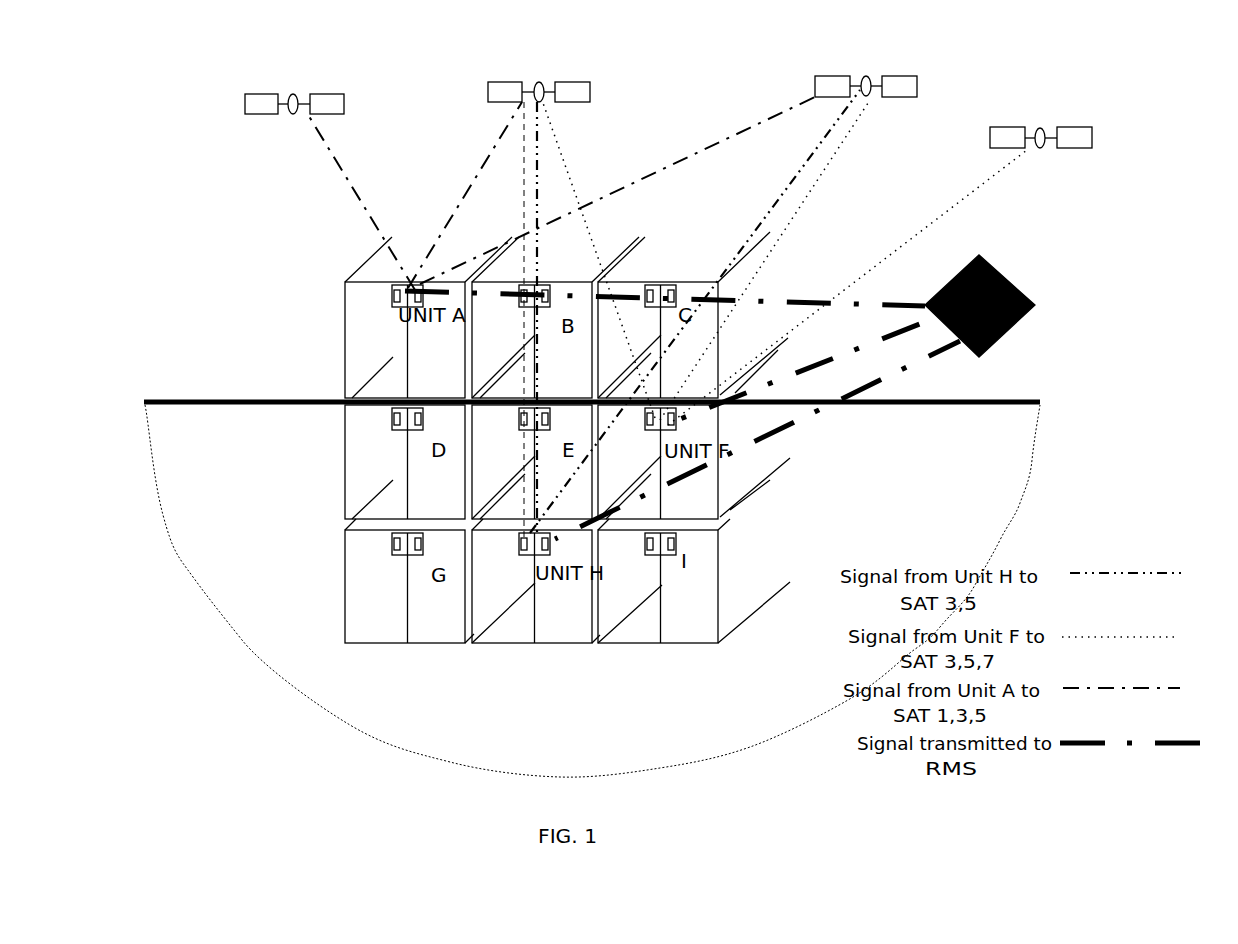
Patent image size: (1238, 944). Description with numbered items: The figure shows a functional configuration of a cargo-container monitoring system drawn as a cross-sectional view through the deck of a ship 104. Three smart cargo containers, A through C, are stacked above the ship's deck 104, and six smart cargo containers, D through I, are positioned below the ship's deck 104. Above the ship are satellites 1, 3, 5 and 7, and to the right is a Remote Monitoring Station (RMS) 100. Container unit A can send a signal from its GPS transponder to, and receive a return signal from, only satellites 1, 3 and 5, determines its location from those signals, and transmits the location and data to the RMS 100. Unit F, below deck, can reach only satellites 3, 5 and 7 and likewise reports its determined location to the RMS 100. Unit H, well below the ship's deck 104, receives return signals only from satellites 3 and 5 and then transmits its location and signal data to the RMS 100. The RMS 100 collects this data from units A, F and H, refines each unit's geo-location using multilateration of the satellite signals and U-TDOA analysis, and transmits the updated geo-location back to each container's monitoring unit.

The Remote Monitoring Station (RMS) 100 is at (1036, 306).
The ship's deck 104 is at (1042, 404).
The satellite (SAT 1) 1 is at (290, 98).
The satellite (SAT 3) 3 is at (558, 75).
The satellite (SAT 5) 5 is at (868, 74).
The satellite (SAT 7) 7 is at (1045, 150).